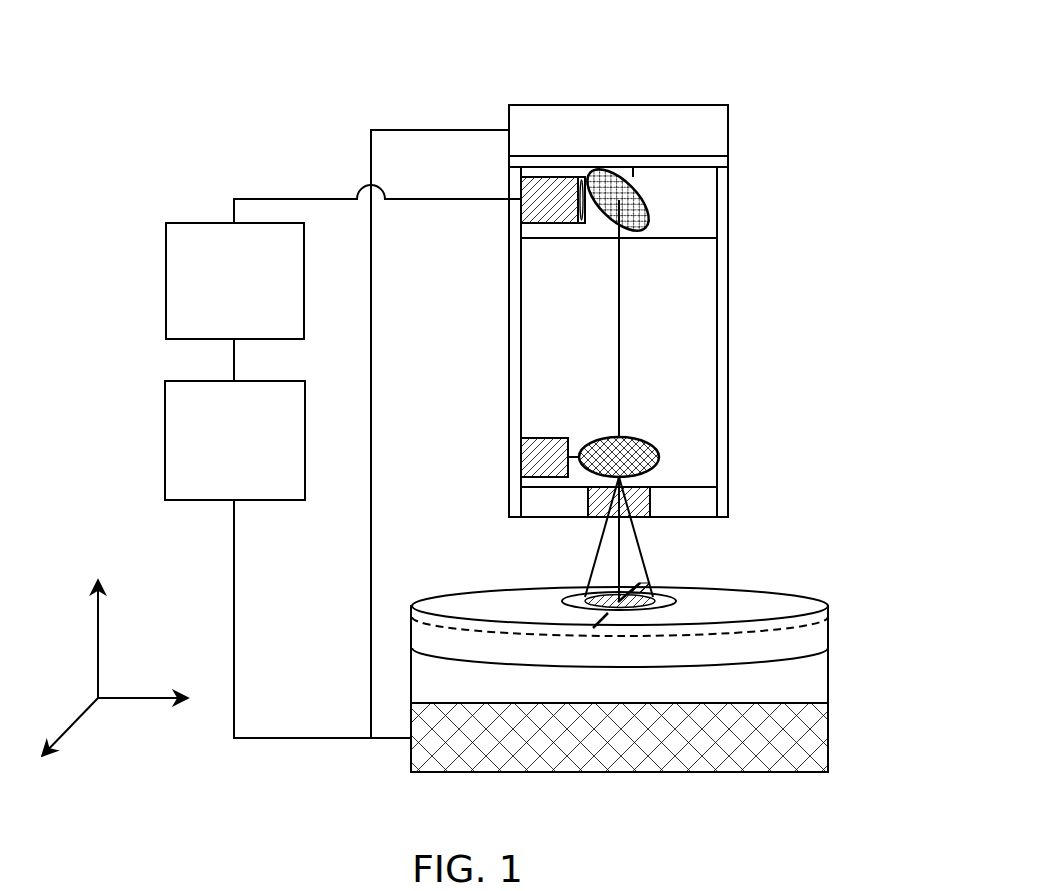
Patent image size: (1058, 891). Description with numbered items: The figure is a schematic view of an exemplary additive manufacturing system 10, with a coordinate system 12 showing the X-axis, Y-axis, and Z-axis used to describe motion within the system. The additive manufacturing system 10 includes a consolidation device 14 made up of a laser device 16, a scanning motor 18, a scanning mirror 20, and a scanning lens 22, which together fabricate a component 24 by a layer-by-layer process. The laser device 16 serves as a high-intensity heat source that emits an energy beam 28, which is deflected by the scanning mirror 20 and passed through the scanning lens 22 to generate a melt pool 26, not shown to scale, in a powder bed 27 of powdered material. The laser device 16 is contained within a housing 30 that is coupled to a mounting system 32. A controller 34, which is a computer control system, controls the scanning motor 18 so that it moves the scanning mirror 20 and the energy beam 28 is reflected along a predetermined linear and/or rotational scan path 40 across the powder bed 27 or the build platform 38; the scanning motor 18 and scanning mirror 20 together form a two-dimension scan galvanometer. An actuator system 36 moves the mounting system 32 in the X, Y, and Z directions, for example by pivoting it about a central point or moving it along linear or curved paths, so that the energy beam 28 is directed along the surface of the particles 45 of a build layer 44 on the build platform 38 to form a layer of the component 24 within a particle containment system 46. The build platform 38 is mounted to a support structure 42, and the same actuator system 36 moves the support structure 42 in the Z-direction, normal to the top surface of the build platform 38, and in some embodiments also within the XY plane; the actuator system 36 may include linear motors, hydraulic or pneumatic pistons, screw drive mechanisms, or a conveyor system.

The additive manufacturing system 10 is at (546, 390).
The coordinate system 12 is at (75, 688).
The consolidation device 14 is at (682, 311).
The laser device 16 is at (521, 180).
The scanning motor 18 is at (540, 438).
The scanning mirror 20 is at (635, 450).
The scanning lens 22 is at (655, 505).
The component 24 is at (562, 592).
The melt pool 26 is at (665, 592).
The powder bed 27 is at (648, 582).
The energy beam 28 is at (622, 262).
The housing 30 is at (730, 336).
The mounting system 32 is at (722, 132).
The controller 34 is at (235, 281).
The actuator system 36 is at (235, 440).
The build platform 38 is at (663, 632).
The scan path 40 is at (590, 623).
The support structure 42 is at (795, 752).
The build layer 44 is at (795, 605).
The particles 45 is at (765, 578).
The particle containment system 46 is at (842, 606).